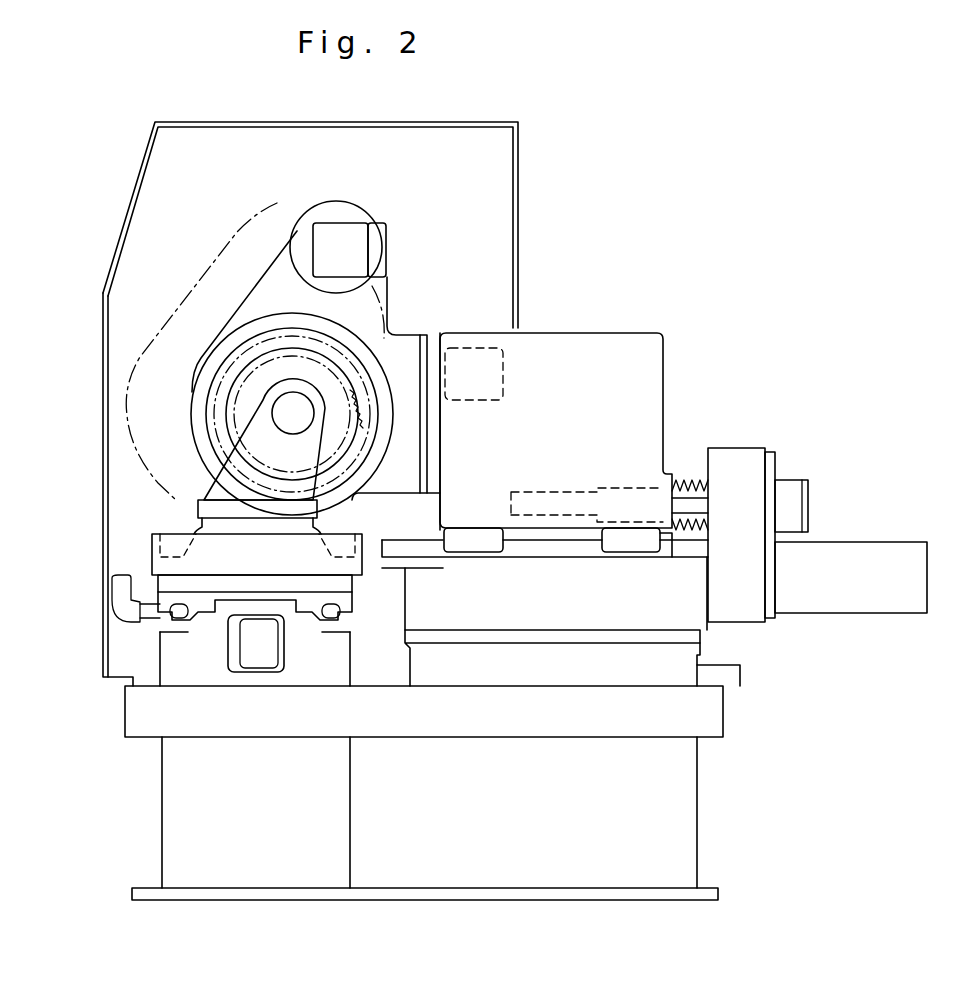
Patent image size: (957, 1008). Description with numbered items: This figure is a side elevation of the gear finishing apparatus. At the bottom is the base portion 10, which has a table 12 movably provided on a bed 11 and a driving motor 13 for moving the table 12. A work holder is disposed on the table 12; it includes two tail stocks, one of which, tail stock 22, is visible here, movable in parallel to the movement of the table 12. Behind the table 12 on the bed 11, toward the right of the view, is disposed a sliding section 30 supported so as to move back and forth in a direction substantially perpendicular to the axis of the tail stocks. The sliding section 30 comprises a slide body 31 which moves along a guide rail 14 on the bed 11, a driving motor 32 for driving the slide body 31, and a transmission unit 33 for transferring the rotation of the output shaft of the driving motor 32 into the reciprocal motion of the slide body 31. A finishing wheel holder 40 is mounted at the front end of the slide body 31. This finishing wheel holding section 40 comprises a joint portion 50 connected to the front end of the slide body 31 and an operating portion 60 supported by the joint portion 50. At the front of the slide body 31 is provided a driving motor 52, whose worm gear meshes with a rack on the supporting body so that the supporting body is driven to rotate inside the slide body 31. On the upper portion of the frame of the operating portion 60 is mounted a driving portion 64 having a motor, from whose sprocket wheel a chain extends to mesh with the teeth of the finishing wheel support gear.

The base portion 10 is at (745, 715).
The bed 11 is at (268, 822).
The table 12 is at (268, 571).
The driving motor 13 is at (272, 658).
The guide rail 14 is at (560, 552).
The tail stock 22 is at (280, 481).
The sliding section 30 is at (727, 368).
The slide body 31 is at (618, 346).
The driving motor 32 is at (838, 558).
The transmission unit 33 is at (732, 456).
The finishing wheel holder 40 is at (440, 240).
The joint portion 50 is at (433, 338).
The driving motor 52 is at (505, 353).
The operating portion 60 is at (397, 312).
The driving portion 64 is at (355, 238).